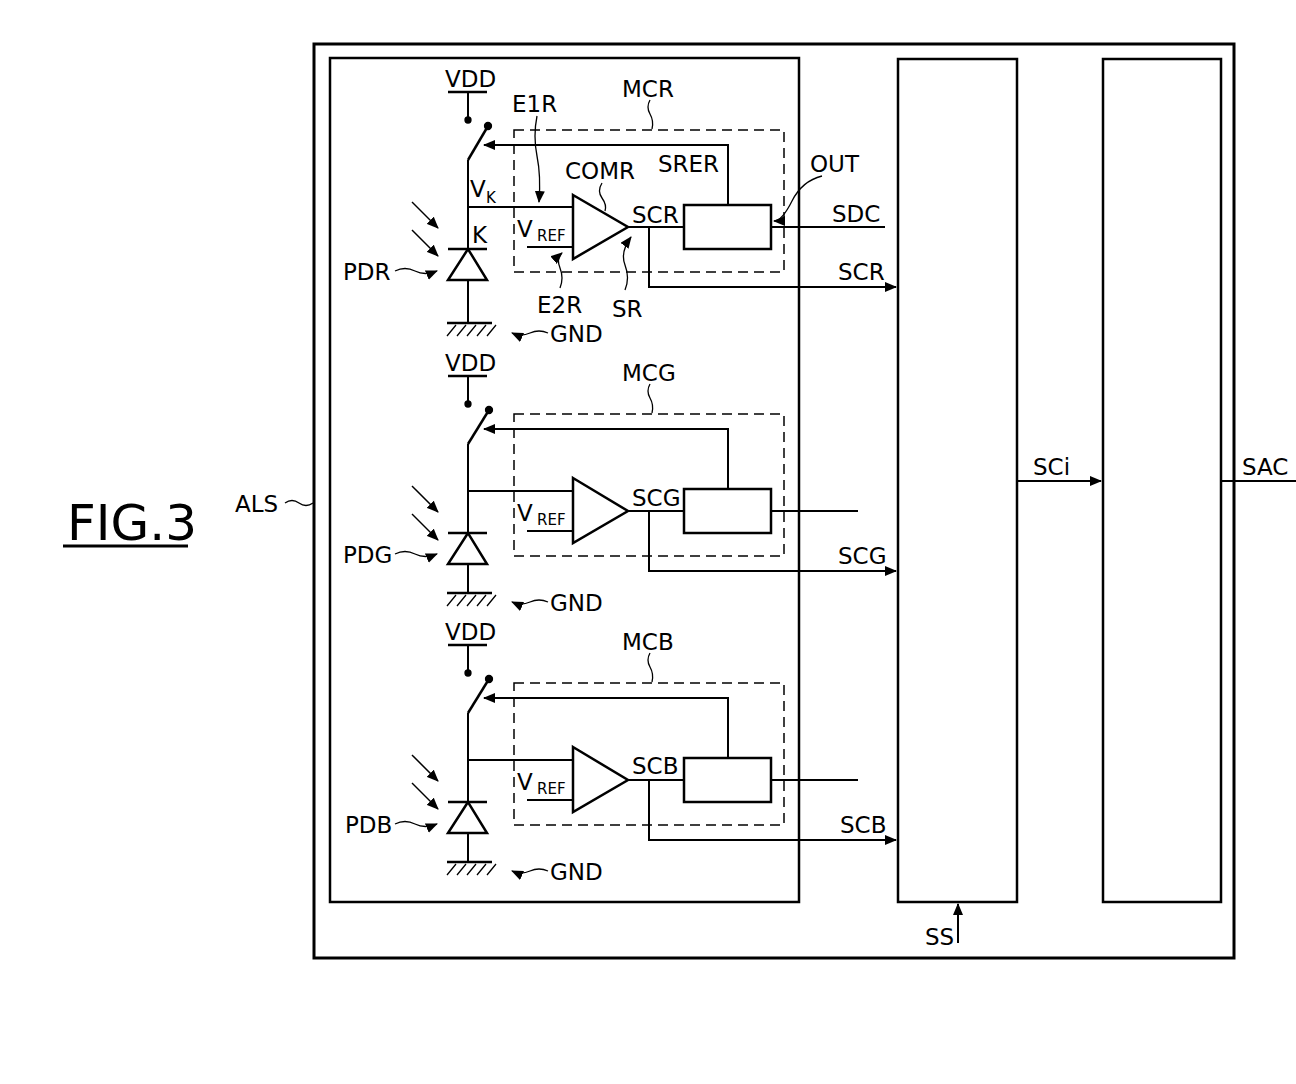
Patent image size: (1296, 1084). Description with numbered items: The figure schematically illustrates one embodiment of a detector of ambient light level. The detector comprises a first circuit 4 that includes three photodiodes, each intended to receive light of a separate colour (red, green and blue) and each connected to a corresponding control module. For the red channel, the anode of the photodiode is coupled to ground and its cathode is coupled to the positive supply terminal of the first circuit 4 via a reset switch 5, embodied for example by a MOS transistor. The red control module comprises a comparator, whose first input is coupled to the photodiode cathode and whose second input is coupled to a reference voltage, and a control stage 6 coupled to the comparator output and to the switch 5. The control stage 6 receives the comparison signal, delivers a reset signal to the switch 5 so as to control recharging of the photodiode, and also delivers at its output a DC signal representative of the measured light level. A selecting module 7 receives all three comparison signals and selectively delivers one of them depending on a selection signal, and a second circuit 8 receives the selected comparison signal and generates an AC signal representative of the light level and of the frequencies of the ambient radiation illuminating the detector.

The first circuit 4 is at (327, 383).
The reset switch 5 is at (456, 139).
The control stage 6 is at (727, 227).
The selecting module 7 is at (957, 480).
The second circuit 8 is at (1162, 480).